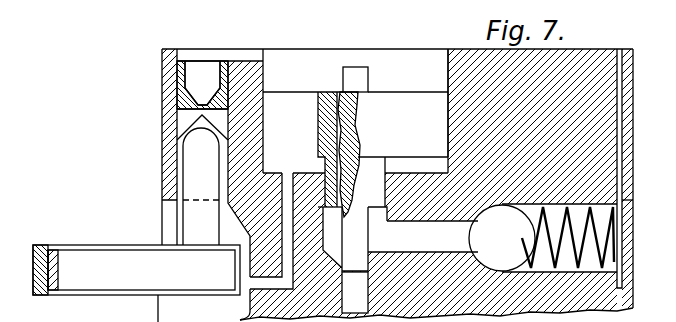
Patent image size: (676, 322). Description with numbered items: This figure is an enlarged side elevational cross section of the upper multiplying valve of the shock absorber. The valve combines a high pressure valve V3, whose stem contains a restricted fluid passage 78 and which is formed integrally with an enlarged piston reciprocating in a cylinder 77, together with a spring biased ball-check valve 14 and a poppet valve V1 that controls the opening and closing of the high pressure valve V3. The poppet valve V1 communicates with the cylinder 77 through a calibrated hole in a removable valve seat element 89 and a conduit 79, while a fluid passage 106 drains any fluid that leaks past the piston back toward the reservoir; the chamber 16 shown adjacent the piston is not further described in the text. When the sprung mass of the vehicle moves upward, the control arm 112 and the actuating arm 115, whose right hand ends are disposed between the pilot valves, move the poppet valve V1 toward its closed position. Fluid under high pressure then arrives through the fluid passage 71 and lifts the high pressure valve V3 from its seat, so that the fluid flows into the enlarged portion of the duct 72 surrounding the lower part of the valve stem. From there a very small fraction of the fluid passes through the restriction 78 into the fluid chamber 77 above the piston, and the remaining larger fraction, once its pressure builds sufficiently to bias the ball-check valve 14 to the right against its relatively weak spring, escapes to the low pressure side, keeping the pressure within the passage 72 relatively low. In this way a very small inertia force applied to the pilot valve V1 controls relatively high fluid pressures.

The removable valve seat element 89 is at (180, 62).
The conduit 79 is at (240, 56).
The restricted fluid passage 78 is at (343, 88).
The cylinder 77 is at (429, 81).
The pressure chamber 16 is at (422, 127).
The conduit 72 is at (450, 251).
The check valve ball 14 is at (513, 232).
The fluid passage 71 is at (363, 305).
The fluid passage 106 is at (281, 236).
The control arm 112 is at (98, 246).
The actuating arm 115 is at (102, 288).
The poppet valve V1 is at (202, 180).
The high pressure valve V3 is at (355, 239).